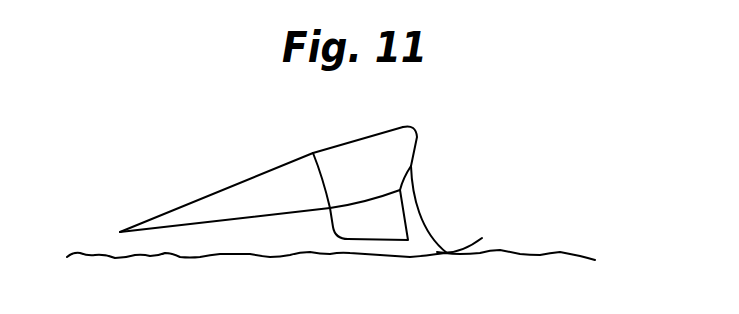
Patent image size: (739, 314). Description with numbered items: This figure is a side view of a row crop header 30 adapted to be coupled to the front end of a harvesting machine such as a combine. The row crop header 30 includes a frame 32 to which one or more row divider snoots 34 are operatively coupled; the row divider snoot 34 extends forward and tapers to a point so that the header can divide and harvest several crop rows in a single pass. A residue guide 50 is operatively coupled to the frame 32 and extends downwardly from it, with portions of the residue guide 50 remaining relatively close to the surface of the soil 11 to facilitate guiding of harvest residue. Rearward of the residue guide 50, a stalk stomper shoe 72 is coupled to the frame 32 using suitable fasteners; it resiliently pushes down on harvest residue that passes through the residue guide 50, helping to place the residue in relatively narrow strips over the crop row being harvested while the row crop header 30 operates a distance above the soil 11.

The soil 11 is at (278, 283).
The row crop header 30 is at (255, 145).
The frame 32 is at (378, 135).
The row divider snoot 34 is at (208, 193).
The residue guide 50 is at (384, 227).
The stalk stomper shoe 72 is at (413, 197).